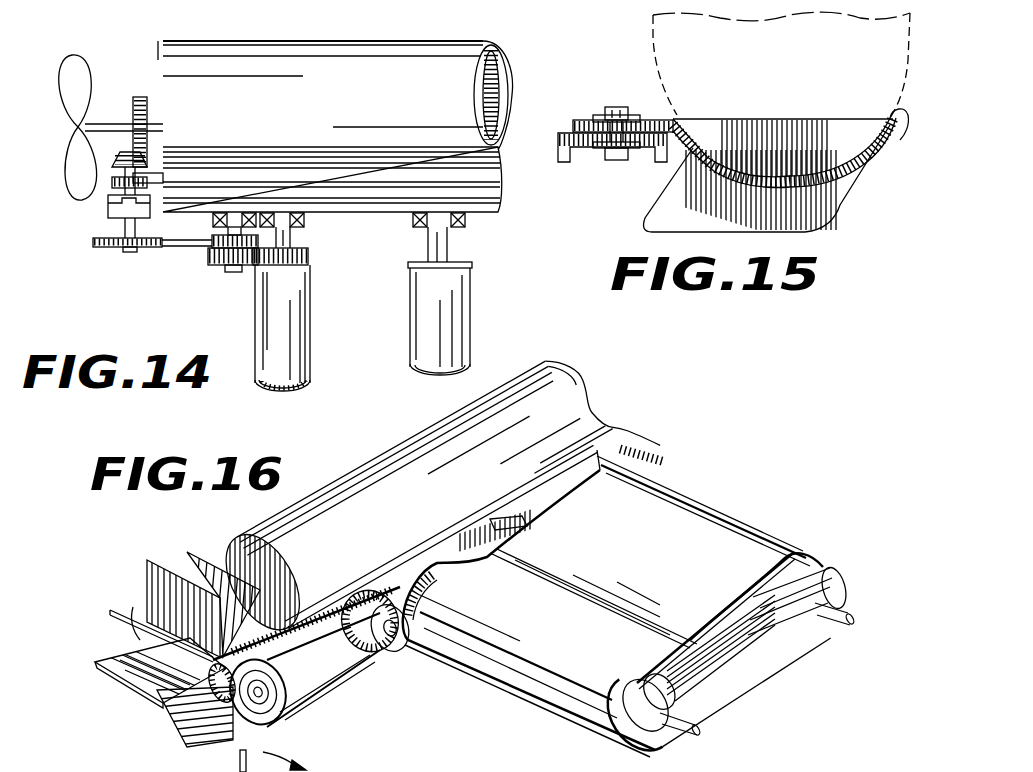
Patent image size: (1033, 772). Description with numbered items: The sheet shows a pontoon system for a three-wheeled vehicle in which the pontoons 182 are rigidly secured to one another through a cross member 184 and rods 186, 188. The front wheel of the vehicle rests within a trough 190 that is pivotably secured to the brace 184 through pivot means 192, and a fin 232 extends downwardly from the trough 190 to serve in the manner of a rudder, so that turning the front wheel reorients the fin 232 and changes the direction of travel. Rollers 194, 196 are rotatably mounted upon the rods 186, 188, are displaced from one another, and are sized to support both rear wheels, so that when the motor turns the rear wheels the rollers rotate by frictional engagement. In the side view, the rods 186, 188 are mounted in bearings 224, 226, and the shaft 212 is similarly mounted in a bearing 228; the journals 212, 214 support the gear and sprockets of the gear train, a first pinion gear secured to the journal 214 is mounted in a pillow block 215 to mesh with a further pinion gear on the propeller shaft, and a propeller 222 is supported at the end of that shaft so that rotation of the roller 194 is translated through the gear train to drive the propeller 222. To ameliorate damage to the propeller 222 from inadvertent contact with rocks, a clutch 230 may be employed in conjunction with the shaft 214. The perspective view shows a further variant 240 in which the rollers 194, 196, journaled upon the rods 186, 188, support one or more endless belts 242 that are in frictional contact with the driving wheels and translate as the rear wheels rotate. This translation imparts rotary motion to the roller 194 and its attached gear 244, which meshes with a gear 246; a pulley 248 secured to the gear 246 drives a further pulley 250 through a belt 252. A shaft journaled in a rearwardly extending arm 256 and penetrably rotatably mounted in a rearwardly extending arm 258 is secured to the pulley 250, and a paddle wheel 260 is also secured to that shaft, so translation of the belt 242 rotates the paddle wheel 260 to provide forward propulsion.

In FIG. 14, the pontoons 182 is at (440, 41).
In FIG. 16, the pontoons 182 is at (392, 455).
In FIG. 15, the cross member 184 is at (560, 130).
In FIG. 14, the rod 186 is at (292, 239).
In FIG. 16, the rod 186 is at (690, 725).
In FIG. 14, the rod 188 is at (428, 236).
In FIG. 16, the rod 188 is at (828, 625).
In FIG. 15, the trough 190 is at (903, 116).
In FIG. 15, the pivot means 192 is at (608, 162).
In FIG. 16, the roller 194 is at (640, 750).
In FIG. 16, the roller 196 is at (825, 563).
In FIG. 14, the journal 212 is at (237, 273).
In FIG. 14, the journal 214 is at (120, 230).
In FIG. 14, the pillow block 215 is at (152, 173).
In FIG. 14, the propeller 222 is at (85, 65).
In FIG. 14, the bearing 224 is at (305, 217).
In FIG. 14, the bearing 226 is at (465, 218).
In FIG. 14, the bearing 228 is at (208, 217).
In FIG. 14, the clutch 230 is at (105, 210).
In FIG. 15, the fin 232 is at (648, 222).
In FIG. 16, the variant 240 is at (450, 708).
In FIG. 16, the endless belt 242 is at (722, 515).
In FIG. 16, the gear 244 is at (412, 565).
In FIG. 16, the gear 246 is at (385, 655).
In FIG. 16, the pulley 248 is at (335, 655).
In FIG. 16, the pulley 250 is at (278, 690).
In FIG. 16, the belt 252 is at (318, 690).
In FIG. 16, the rearwardly extending arm 256 is at (145, 615).
In FIG. 16, the rearwardly extending arm 258 is at (175, 735).
In FIG. 16, the paddle wheel 260 is at (150, 700).